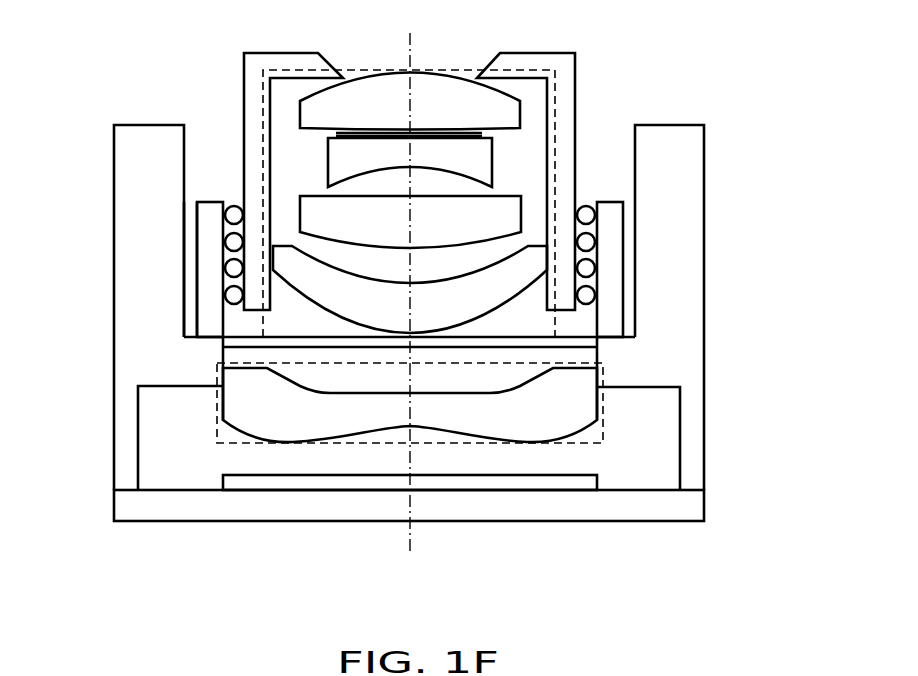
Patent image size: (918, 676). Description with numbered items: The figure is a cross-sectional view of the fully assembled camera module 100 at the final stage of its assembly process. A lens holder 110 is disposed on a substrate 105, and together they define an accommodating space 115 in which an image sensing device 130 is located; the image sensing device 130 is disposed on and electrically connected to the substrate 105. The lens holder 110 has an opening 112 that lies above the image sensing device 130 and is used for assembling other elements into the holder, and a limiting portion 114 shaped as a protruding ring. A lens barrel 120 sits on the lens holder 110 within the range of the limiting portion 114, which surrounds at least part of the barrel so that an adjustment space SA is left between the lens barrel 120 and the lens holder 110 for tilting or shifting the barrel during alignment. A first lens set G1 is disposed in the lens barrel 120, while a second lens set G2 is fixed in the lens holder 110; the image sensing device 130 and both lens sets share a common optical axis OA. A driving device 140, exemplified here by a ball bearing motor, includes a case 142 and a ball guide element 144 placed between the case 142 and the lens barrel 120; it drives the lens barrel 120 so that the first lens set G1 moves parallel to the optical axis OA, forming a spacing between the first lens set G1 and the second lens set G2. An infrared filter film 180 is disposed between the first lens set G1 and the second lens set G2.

The camera module 100 is at (812, 617).
The substrate 105 is at (687, 505).
The lens holder 110 is at (440, 307).
The opening 112 is at (586, 358).
The limiting portion 114 is at (678, 178).
The accommodating space 115 is at (162, 428).
The lens barrel 120 is at (567, 85).
The image sensing device 130 is at (510, 483).
The driving device 140 is at (514, 268).
The case 142 is at (610, 257).
The ball guide element 144 is at (586, 215).
The infrared filter film 180 is at (253, 341).
The first lens set G1 is at (363, 68).
The second lens set G2 is at (603, 407).
The adjustment space SA is at (189, 222).
The optical axis OA is at (411, 313).